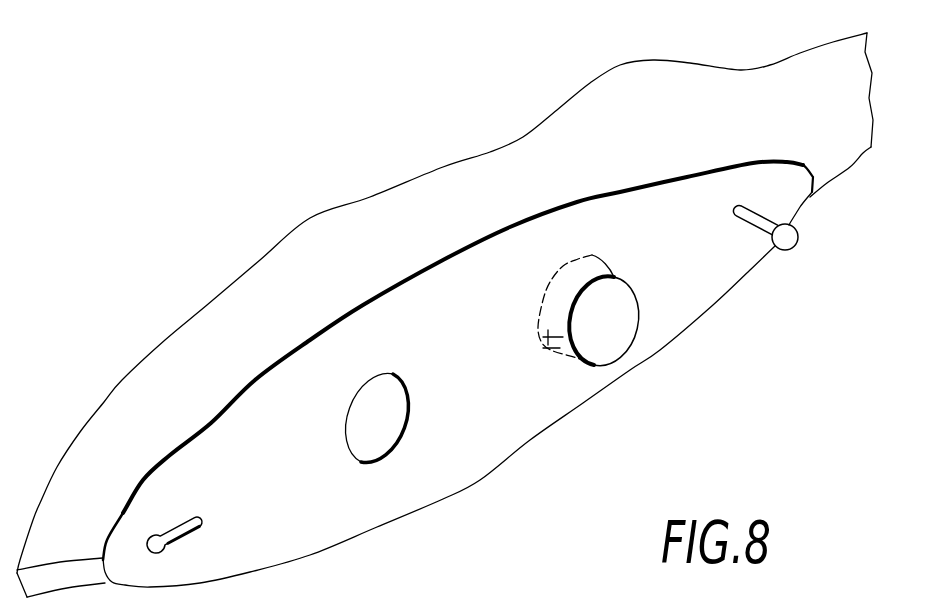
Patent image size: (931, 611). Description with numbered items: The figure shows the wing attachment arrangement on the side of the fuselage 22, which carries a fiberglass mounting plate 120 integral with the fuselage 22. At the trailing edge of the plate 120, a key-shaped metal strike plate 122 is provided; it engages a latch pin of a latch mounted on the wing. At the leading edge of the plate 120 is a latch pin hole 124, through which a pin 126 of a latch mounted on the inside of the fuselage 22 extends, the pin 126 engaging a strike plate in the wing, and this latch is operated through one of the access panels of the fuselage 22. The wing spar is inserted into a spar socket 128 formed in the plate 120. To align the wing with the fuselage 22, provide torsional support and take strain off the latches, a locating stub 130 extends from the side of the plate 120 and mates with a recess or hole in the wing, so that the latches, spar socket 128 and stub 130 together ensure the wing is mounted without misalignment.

The fuselage 22 is at (170, 335).
The mounting plate 120 is at (509, 444).
The strike plate 122 is at (187, 532).
The latch pin hole 124 is at (737, 208).
The pin 126 is at (793, 237).
The spar socket 128 is at (345, 410).
The locating stub 130 is at (633, 340).